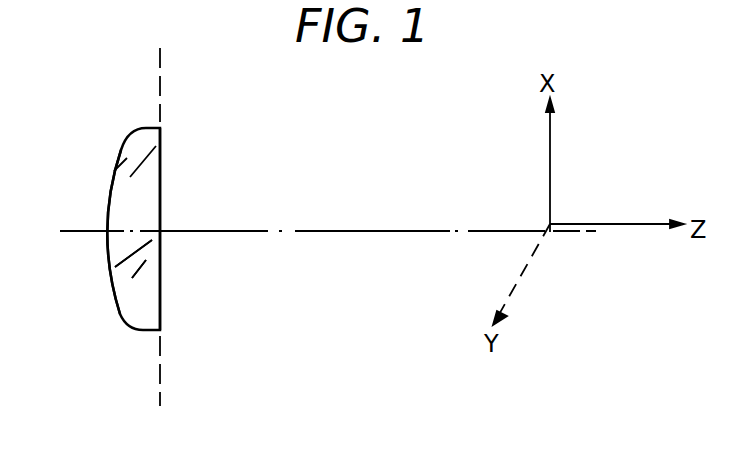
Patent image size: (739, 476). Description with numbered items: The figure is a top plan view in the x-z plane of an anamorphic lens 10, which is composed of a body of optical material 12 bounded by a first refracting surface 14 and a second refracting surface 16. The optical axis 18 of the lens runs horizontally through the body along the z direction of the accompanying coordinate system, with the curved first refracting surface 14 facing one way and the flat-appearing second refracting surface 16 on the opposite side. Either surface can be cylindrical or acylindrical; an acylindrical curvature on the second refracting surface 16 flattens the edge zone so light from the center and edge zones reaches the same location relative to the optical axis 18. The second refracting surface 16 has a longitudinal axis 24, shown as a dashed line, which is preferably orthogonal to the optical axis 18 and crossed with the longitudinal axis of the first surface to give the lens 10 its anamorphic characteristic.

The anamorphic lens 10 is at (107, 153).
The body of optical material 12 is at (124, 294).
The first refracting surface 14 is at (109, 204).
The second refracting surface 16 is at (161, 287).
The optical axis 18 is at (384, 232).
The longitudinal axis 24 is at (154, 208).